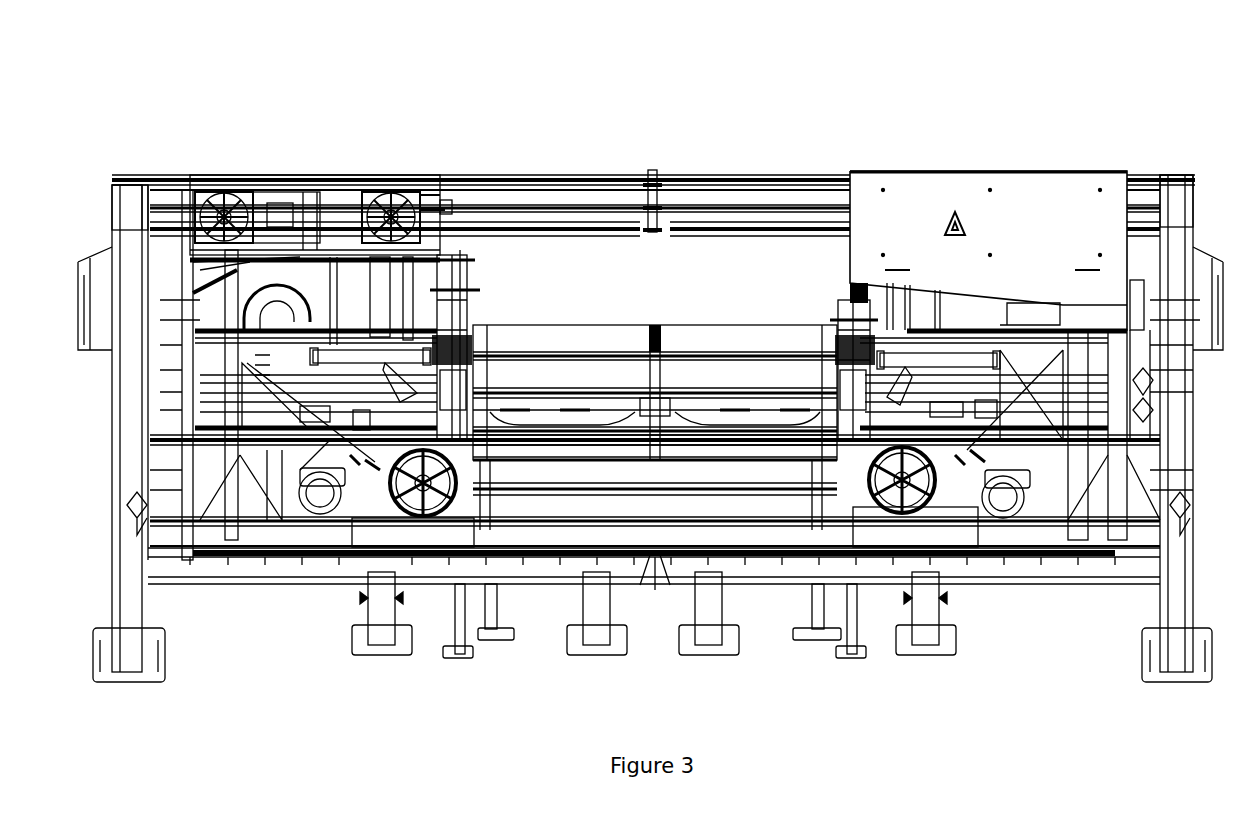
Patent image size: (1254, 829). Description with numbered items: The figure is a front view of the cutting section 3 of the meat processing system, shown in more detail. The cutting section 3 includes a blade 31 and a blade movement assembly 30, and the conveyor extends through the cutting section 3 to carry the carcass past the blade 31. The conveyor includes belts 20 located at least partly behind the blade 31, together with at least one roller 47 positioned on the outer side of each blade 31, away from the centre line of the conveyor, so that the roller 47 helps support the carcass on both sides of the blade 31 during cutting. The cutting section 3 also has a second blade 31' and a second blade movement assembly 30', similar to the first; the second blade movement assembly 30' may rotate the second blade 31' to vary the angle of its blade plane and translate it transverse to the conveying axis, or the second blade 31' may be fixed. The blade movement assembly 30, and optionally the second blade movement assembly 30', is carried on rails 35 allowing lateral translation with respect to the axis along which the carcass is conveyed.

The cutting section 3 is at (928, 48).
The belts 20 is at (548, 338).
The blade movement assembly 30 is at (321, 165).
The second blade movement assembly 30' is at (997, 210).
The blade 31 is at (448, 282).
The second blade 31' is at (837, 283).
The rails 35 is at (557, 192).
The roller 47 is at (333, 362).